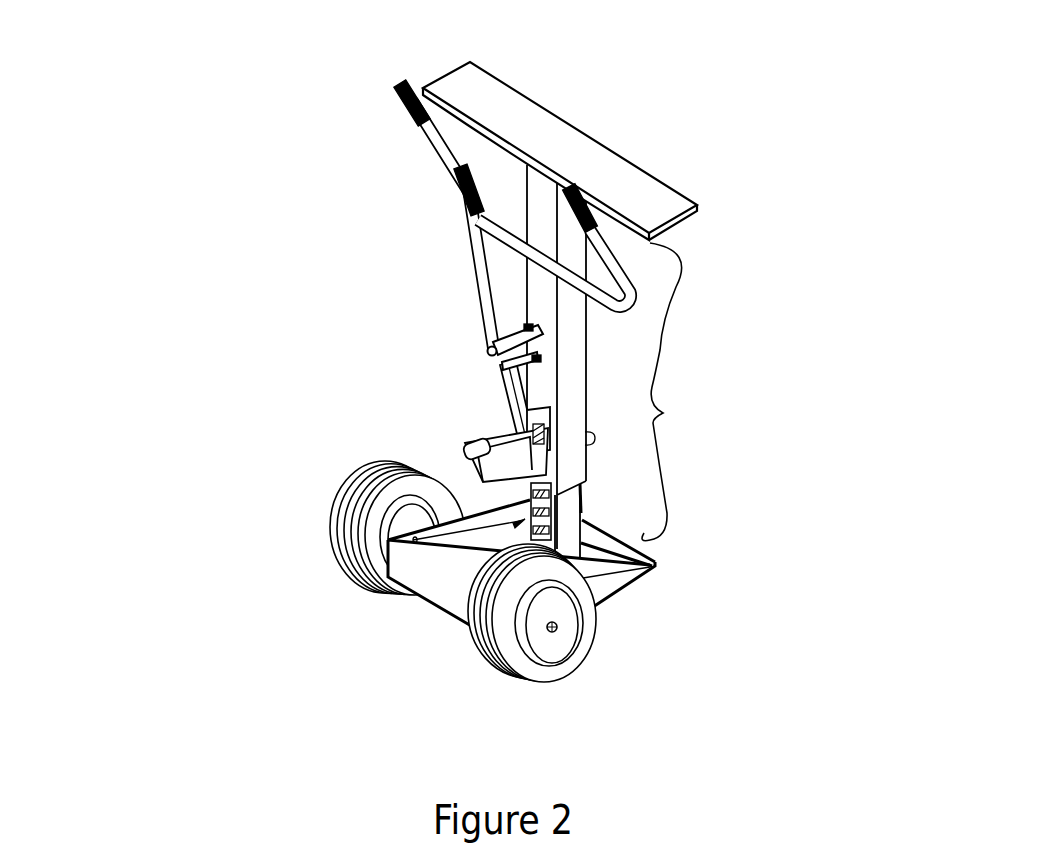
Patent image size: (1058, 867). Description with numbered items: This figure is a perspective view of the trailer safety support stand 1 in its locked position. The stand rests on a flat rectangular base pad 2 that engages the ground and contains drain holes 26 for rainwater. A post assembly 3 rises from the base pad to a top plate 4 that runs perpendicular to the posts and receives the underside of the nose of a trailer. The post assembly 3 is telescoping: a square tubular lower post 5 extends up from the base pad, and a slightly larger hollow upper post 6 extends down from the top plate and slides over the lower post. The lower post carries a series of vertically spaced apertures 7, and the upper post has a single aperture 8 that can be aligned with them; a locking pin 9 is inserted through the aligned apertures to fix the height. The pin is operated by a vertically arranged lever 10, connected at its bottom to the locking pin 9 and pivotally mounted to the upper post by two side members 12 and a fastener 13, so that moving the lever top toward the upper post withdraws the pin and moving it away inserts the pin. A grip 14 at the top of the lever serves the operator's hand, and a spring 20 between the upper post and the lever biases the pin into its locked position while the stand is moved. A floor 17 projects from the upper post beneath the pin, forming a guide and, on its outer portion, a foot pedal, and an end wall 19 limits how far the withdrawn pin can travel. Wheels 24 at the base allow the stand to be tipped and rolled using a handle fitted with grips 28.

The trailer safety support stand 1 is at (290, 263).
The base pad 2 is at (443, 614).
The post assembly 3 is at (663, 413).
The top plate 4 is at (655, 168).
The lower post 5 is at (584, 502).
The upper post 6 is at (584, 333).
The apertures 7 is at (527, 500).
The aperture 8 is at (552, 428).
The locking pin 9 is at (595, 439).
The lever 10 is at (469, 281).
The side members 12 is at (513, 333).
The fastener 13 is at (487, 352).
The grip 14 is at (466, 199).
The floor 17 is at (483, 437).
The end wall 19 is at (490, 467).
The spring 20 is at (546, 358).
The wheels 24 is at (560, 663).
The holes 26 is at (615, 590).
The grips 28 is at (408, 108).